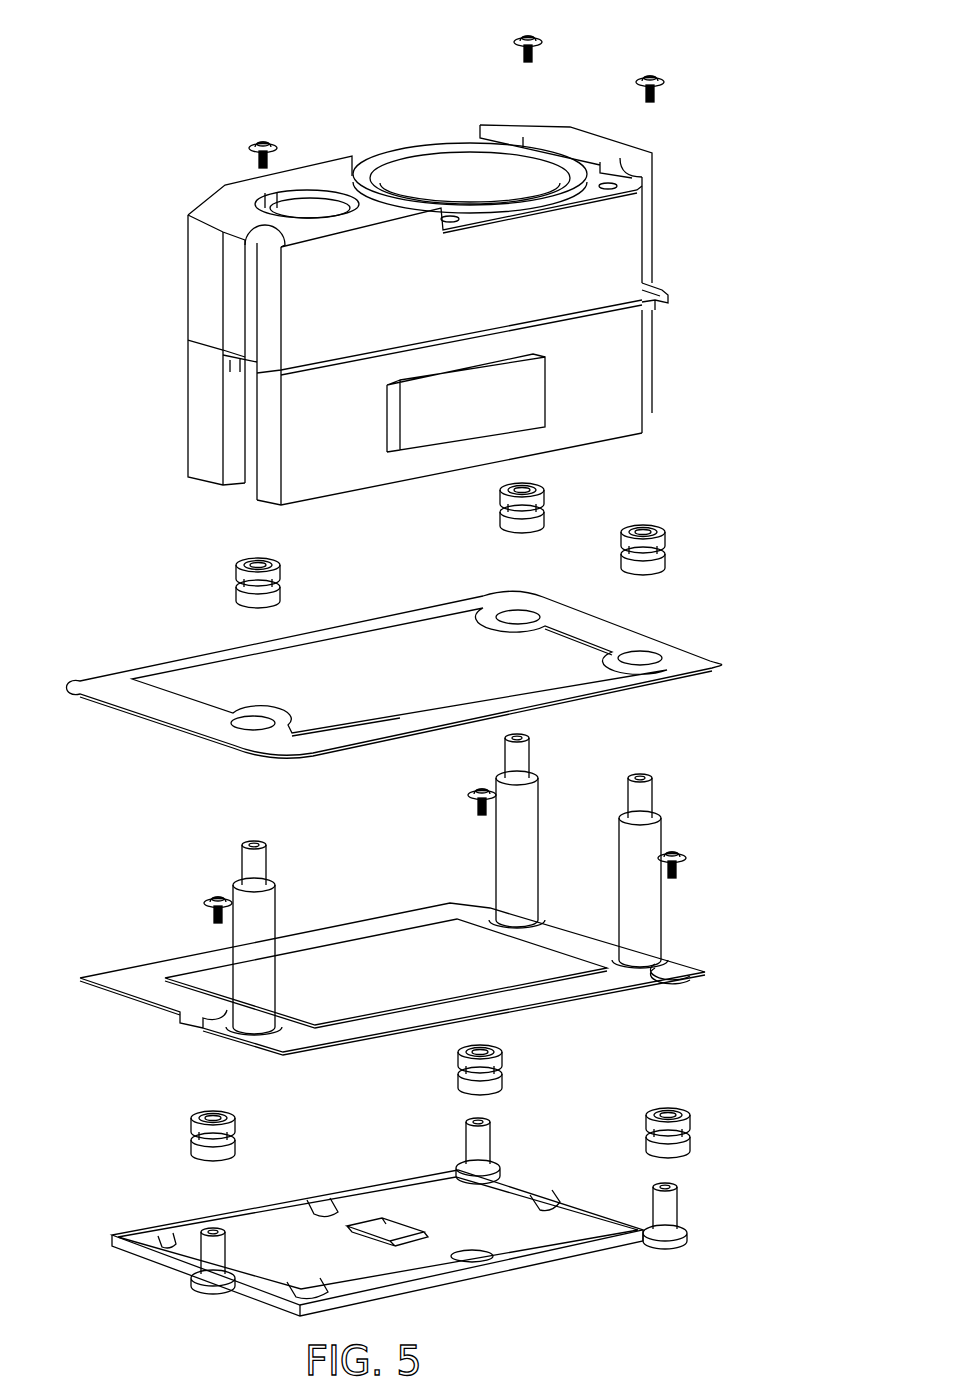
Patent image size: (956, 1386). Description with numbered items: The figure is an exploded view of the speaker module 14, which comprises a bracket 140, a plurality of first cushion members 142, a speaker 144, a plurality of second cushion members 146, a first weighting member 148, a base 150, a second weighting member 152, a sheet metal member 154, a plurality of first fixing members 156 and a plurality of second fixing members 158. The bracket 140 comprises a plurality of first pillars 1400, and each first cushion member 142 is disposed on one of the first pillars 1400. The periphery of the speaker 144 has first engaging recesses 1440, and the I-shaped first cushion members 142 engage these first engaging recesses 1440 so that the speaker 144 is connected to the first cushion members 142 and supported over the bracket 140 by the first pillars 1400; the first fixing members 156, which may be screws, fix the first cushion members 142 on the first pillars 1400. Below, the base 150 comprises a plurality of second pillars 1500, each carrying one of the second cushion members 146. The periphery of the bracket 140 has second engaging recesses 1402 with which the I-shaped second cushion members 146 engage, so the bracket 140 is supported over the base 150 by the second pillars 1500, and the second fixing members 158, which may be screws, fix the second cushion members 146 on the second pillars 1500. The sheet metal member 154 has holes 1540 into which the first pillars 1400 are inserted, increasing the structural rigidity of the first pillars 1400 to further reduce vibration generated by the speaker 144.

The speaker module 14 is at (192, 70).
The speaker 144 is at (653, 208).
The first engaging recess 1440 is at (690, 302).
The first weighting member 148 is at (517, 393).
The first fixing member 156 is at (272, 137).
The first cushion member 142 is at (665, 542).
The sheet metal member 154 is at (713, 660).
The hole 1540 is at (508, 598).
The bracket 140 is at (84, 975).
The second engaging recess 1402 is at (688, 998).
The first pillar 1400 is at (662, 912).
The second fixing member 158 is at (210, 898).
The second cushion member 146 is at (692, 1122).
The base 150 is at (567, 1258).
The second weighting member 152 is at (356, 1253).
The second pillar 1500 is at (680, 1208).